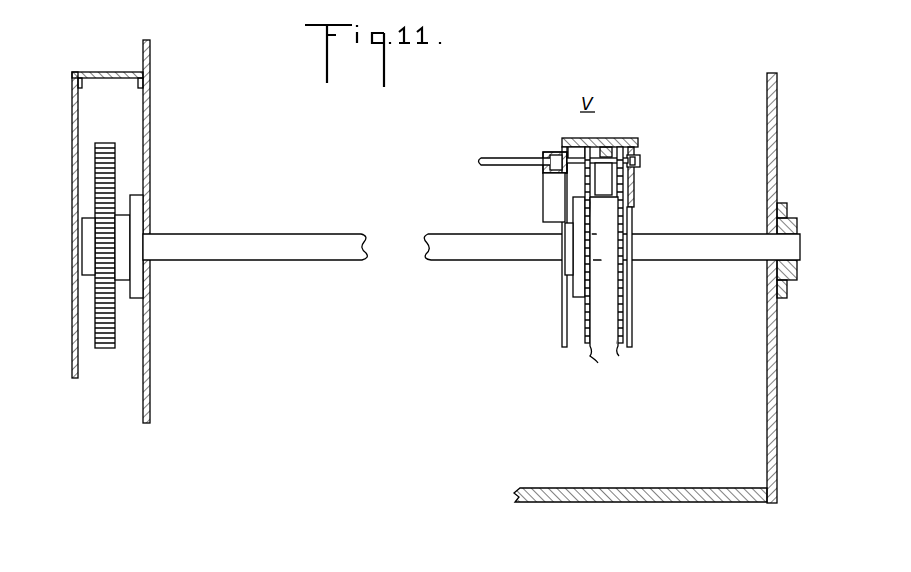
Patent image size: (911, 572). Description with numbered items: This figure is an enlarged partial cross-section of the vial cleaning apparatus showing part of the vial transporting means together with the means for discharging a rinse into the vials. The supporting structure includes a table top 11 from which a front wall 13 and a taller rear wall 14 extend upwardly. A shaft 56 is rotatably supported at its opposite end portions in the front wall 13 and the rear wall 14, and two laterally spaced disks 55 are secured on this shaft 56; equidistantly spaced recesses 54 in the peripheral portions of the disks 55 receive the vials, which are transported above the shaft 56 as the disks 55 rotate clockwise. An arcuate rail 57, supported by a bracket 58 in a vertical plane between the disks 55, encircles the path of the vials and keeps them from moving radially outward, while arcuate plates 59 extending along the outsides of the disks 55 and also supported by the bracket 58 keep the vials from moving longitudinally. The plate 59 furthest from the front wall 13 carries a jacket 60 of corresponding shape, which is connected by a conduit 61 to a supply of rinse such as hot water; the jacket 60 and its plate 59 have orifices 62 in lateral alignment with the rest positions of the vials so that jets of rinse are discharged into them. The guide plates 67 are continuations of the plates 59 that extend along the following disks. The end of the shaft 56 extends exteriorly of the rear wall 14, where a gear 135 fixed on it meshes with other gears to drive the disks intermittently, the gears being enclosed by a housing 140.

The table top 11 is at (600, 503).
The front wall 13 is at (767, 128).
The rear wall 14 is at (150, 110).
The housing 140 is at (72, 162).
The gear 135 is at (101, 325).
The shaft 56 is at (363, 260).
The bracket 58 is at (600, 138).
The guide plate 67 is at (562, 336).
The conduit 61 is at (485, 157).
The orifice 62 is at (558, 150).
The jacket 60 is at (545, 200).
The arcuate rail 57 is at (603, 185).
The recess 54 is at (585, 322).
The arcuate plate 59 is at (569, 157).
The disk 55 is at (604, 289).